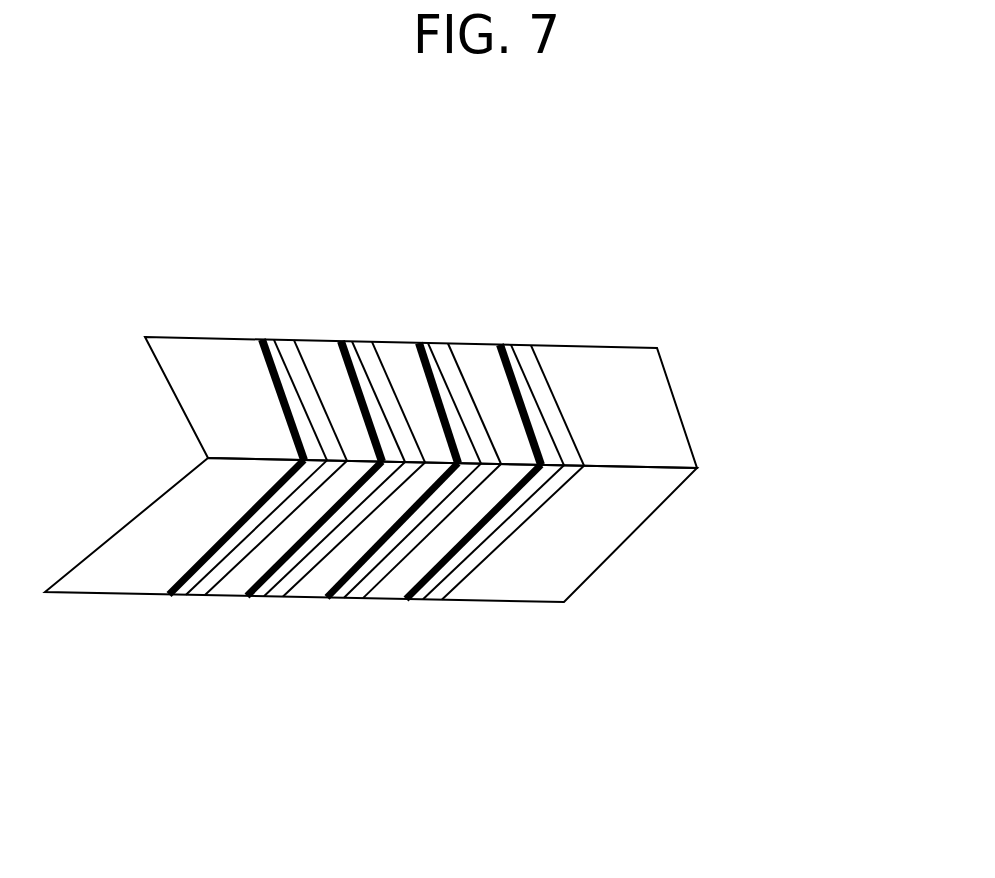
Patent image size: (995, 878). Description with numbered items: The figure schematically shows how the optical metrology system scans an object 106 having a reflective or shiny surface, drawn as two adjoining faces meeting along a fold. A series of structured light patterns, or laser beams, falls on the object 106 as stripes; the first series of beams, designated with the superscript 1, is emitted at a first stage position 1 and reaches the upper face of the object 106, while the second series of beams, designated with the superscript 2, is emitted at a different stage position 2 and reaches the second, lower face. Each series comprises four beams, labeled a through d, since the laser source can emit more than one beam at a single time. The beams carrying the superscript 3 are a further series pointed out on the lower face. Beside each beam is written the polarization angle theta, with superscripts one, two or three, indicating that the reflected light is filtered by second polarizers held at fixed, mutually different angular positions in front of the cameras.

The object 106 is at (196, 414).
The first stage position 1 is at (501, 335).
The second stage position 2 is at (431, 592).
The third set of thin grating lines La3-Ld3 3 is at (254, 559).